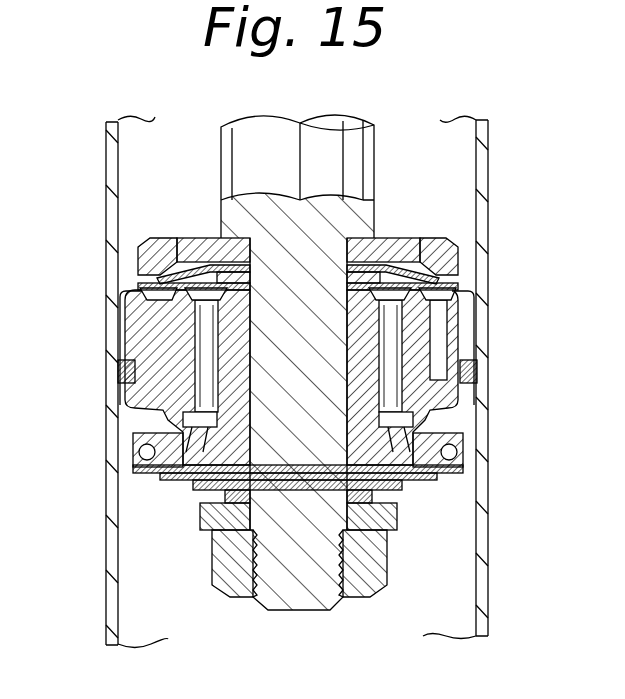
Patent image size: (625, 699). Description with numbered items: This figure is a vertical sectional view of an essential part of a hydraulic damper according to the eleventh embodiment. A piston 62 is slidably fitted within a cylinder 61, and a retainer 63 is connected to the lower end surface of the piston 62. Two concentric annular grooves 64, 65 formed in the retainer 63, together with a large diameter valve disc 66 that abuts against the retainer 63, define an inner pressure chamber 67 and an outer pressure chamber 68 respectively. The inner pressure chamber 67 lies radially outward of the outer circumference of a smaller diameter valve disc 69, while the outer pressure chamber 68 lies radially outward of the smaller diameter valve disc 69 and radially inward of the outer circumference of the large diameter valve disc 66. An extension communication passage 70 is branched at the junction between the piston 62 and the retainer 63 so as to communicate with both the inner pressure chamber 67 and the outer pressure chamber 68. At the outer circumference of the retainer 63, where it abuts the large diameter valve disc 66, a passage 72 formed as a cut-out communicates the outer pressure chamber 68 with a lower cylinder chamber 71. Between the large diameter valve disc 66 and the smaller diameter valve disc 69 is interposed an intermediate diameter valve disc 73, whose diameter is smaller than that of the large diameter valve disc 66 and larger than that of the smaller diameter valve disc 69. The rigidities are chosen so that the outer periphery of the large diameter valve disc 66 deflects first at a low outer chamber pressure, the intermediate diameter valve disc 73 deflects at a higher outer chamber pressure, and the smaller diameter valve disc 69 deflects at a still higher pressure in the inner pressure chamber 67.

The cylinder 61 is at (480, 158).
The piston 62 is at (445, 340).
The retainer 63 is at (462, 425).
The annular groove 64 is at (158, 440).
The annular groove 65 is at (150, 447).
The large diameter valve disc 66 is at (440, 490).
The inner pressure chamber 67 is at (467, 450).
The outer pressure chamber 68 is at (473, 455).
The smaller diameter valve disc 69 is at (417, 480).
The extension communication passage 70 is at (478, 340).
The lower cylinder chamber 71 is at (455, 622).
The passage 72 is at (448, 485).
The intermediate diameter valve disc 73 is at (427, 480).